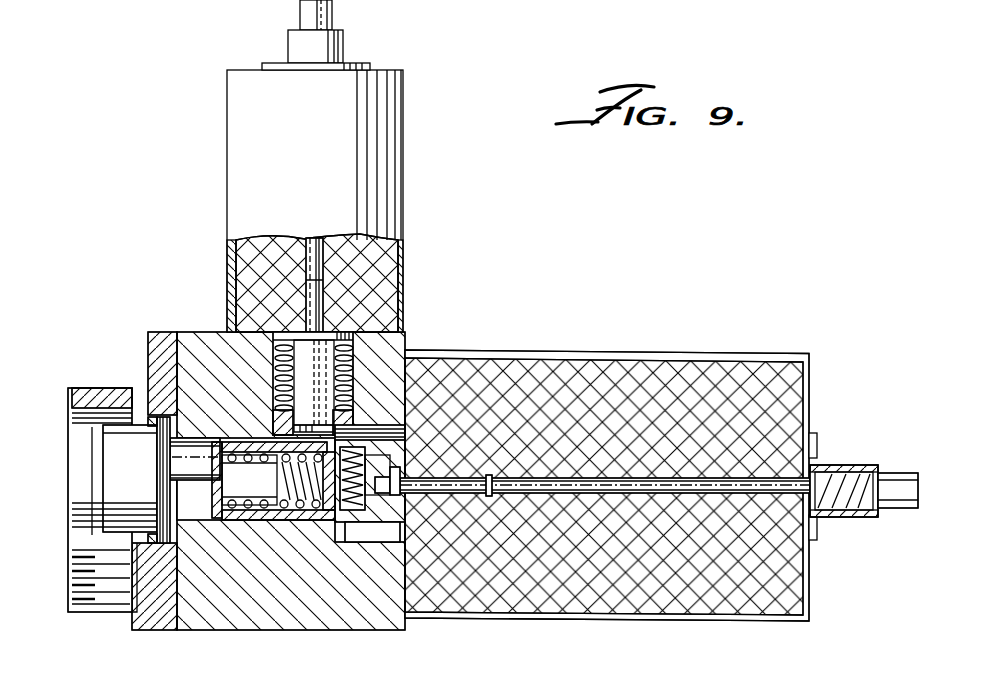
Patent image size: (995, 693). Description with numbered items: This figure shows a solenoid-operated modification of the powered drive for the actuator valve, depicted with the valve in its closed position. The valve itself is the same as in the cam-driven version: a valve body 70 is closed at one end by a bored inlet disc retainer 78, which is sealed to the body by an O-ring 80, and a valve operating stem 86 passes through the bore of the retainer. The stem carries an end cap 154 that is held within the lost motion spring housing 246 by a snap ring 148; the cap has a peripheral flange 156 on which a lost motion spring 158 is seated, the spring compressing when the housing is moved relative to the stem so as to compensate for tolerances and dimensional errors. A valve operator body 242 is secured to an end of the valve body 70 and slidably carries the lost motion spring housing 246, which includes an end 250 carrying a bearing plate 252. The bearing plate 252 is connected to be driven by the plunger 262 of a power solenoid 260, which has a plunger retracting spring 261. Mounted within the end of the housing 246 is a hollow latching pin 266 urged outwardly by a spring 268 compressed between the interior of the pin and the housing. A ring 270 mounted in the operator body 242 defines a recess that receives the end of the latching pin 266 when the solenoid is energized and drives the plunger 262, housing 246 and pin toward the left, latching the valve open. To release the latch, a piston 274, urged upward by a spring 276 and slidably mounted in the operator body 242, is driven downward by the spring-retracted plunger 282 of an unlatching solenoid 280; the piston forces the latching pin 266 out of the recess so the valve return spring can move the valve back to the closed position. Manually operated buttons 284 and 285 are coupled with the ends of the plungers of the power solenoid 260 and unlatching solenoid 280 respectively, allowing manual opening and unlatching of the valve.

The valve body 70 is at (166, 334).
The inlet disc retainer 78 is at (118, 456).
The O-ring 80 is at (152, 418).
The valve operating stem 86 is at (170, 486).
The snap ring 148 is at (218, 450).
The end cap 154 is at (249, 480).
The peripheral flange 156 is at (240, 452).
The lost motion spring 158 is at (232, 512).
The valve operator body 242 is at (378, 626).
The lost motion spring housing 246 is at (295, 518).
The end 250 is at (400, 452).
The bearing plate 252 is at (398, 482).
The power solenoid 260 is at (685, 350).
The plunger retracting spring 261 is at (828, 474).
The plunger 262 is at (635, 480).
The latching pin 266 is at (405, 440).
The spring 268 is at (343, 508).
The ring 270 is at (348, 440).
The piston 274 is at (345, 378).
The spring 276 is at (275, 353).
The unlatching solenoid 280 is at (355, 201).
The plunger 282 is at (318, 246).
The manually operated button 284 is at (905, 512).
The manually operated button 285 is at (333, 23).